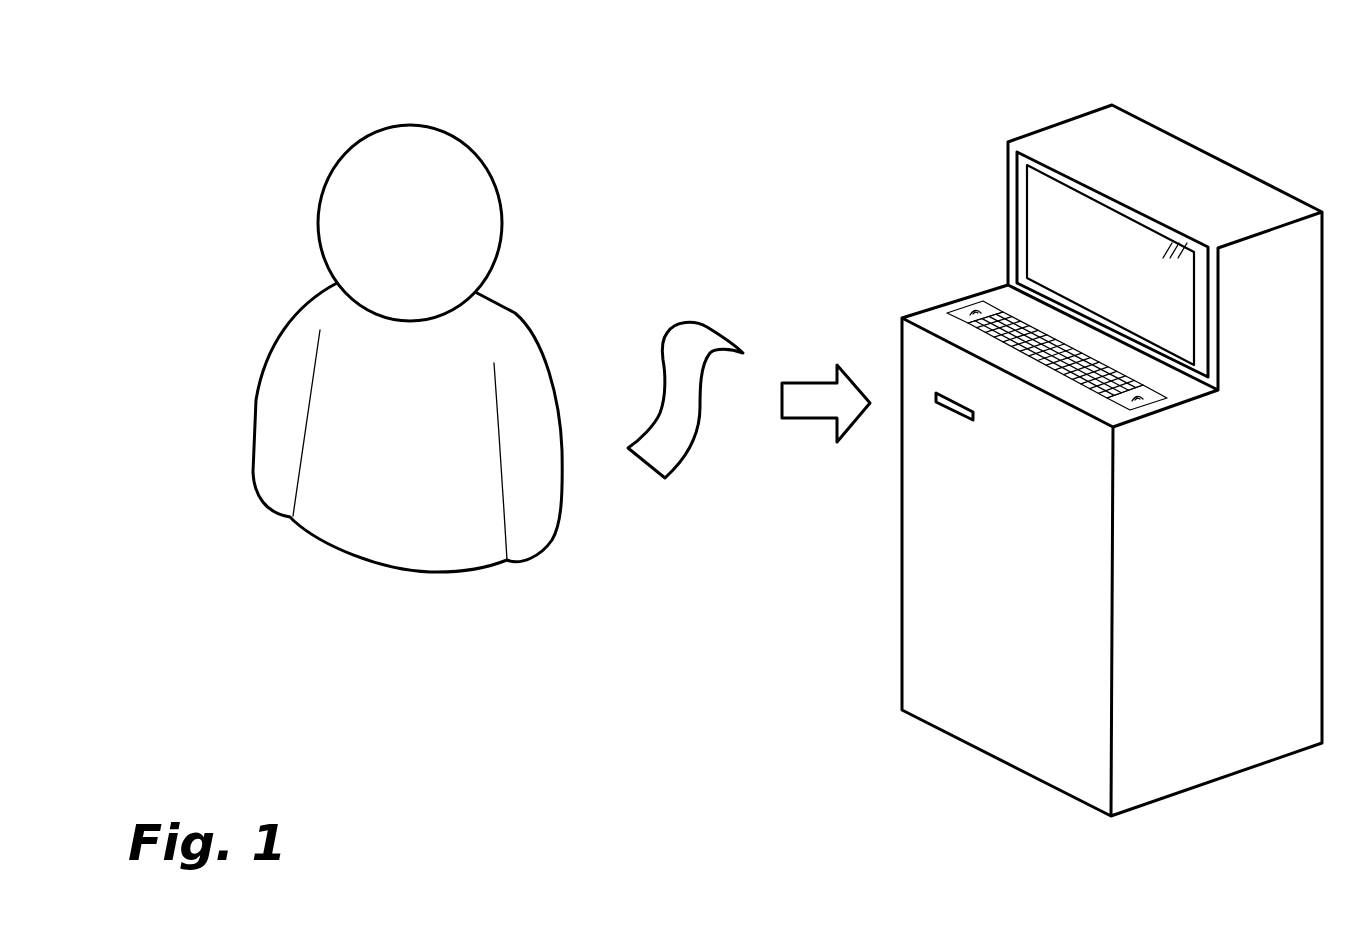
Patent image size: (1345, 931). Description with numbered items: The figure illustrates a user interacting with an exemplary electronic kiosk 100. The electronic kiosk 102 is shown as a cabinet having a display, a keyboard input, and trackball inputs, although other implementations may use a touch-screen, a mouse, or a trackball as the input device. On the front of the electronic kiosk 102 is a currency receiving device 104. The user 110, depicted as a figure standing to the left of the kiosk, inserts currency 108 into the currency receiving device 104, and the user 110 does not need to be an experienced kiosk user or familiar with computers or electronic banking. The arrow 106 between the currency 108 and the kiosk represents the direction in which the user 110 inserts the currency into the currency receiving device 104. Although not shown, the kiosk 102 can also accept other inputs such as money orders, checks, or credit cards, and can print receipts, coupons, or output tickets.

The electronic kiosk 100 is at (485, 728).
The electronic kiosk 102 is at (1167, 177).
The currency receiving device 104 is at (938, 395).
The arrow 106 is at (818, 397).
The currency 108 is at (687, 340).
The user 110 is at (440, 175).